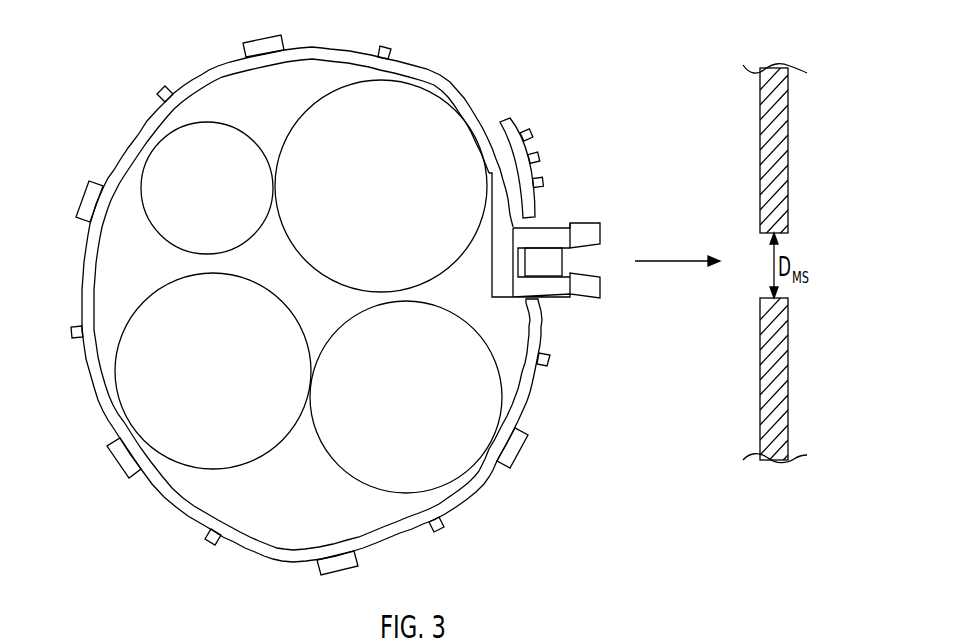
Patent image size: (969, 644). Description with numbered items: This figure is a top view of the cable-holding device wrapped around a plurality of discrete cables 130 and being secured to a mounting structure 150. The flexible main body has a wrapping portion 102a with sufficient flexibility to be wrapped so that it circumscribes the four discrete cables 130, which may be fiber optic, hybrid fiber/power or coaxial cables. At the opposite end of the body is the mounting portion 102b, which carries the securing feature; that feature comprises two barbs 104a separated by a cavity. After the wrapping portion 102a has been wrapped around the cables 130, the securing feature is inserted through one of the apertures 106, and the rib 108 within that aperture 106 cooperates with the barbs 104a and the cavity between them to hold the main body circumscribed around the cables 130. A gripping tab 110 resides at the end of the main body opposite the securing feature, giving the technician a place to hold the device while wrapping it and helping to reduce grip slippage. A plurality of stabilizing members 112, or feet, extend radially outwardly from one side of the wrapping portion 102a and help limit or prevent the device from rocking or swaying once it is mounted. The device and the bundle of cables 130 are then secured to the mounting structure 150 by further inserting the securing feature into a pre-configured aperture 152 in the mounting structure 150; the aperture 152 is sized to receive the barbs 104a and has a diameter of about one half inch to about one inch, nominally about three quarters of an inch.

The wrapping portion 102a is at (100, 383).
The mounting portion 102b is at (505, 257).
The barbs 104a is at (584, 223).
The apertures 106 is at (545, 223).
The rib 108 is at (263, 36).
The gripping tab 110 is at (536, 135).
The stabilizing members 112 is at (383, 46).
The discrete cables 130 is at (223, 200).
The mounting structure 150 is at (788, 155).
The aperture in the mounting structure 152 is at (817, 300).